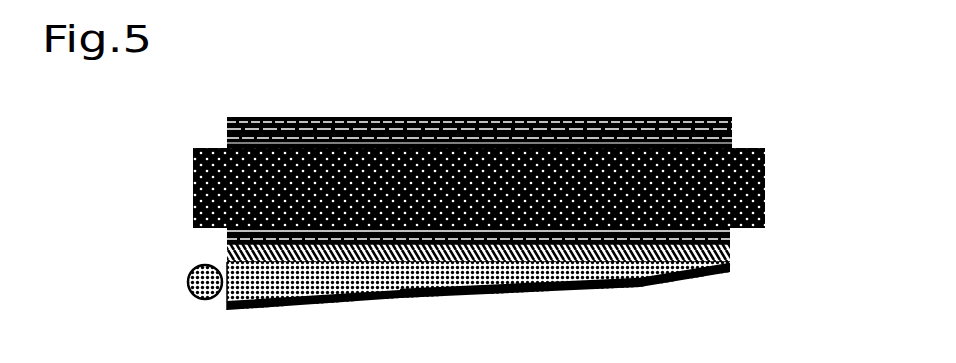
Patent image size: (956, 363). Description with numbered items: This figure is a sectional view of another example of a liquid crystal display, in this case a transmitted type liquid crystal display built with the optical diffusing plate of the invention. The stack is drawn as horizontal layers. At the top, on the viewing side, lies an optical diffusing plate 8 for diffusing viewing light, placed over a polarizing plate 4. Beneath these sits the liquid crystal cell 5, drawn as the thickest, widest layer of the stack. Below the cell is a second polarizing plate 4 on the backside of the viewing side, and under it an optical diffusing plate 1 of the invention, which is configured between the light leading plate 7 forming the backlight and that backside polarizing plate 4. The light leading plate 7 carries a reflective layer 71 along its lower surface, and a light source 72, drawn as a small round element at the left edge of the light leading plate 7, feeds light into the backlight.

The optical diffusing plate 1 is at (732, 249).
The polarizing plate 4 is at (732, 140).
The liquid crystal cell 5 is at (765, 180).
The light leading plate 7 is at (398, 298).
The optical diffusing plate 8 is at (732, 122).
The reflective layer 71 is at (600, 281).
The light source 72 is at (188, 278).